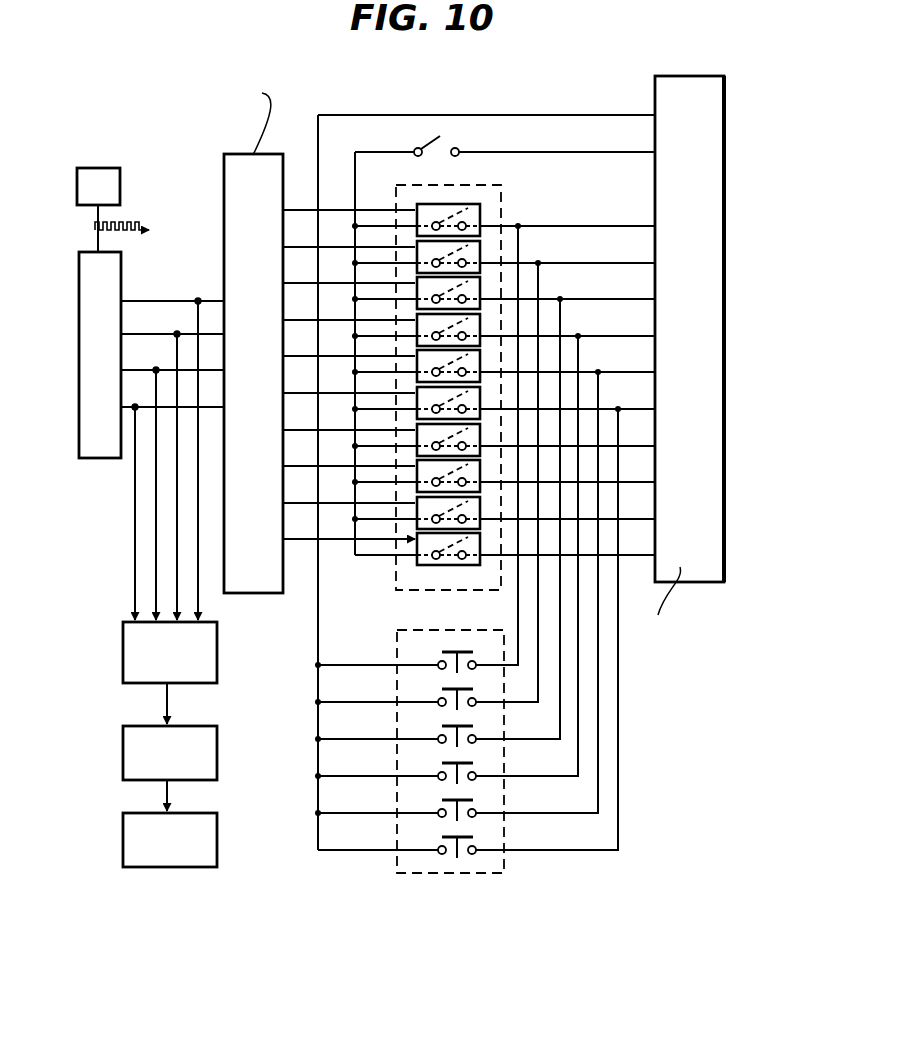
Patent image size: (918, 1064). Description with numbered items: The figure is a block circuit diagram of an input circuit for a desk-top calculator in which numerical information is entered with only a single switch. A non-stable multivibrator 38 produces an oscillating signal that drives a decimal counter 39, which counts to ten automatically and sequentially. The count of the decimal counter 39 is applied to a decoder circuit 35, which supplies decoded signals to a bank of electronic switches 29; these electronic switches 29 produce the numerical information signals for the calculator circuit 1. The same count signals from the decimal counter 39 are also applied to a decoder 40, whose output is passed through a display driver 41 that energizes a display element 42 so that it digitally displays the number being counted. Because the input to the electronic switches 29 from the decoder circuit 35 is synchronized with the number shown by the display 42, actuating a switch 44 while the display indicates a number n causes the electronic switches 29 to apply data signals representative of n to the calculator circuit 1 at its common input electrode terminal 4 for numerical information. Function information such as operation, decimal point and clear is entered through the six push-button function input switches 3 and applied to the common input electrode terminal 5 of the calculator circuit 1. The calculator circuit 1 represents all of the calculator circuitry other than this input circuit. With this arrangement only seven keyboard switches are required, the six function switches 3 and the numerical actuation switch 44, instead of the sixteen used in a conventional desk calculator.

The calculator circuit 1 is at (715, 182).
The function input switches 3 is at (482, 877).
The common input electrode terminal 4 is at (566, 151).
The common input electrode terminal 5 is at (496, 114).
The electronic switches 29 is at (400, 588).
The decoder circuit 35 is at (265, 590).
The non-stable multivibrator 38 is at (100, 175).
The decimal counter 39 is at (103, 448).
The decoder 40 is at (133, 653).
The display driver 41 is at (132, 740).
The display element 42 is at (135, 833).
The switch 44 is at (432, 146).